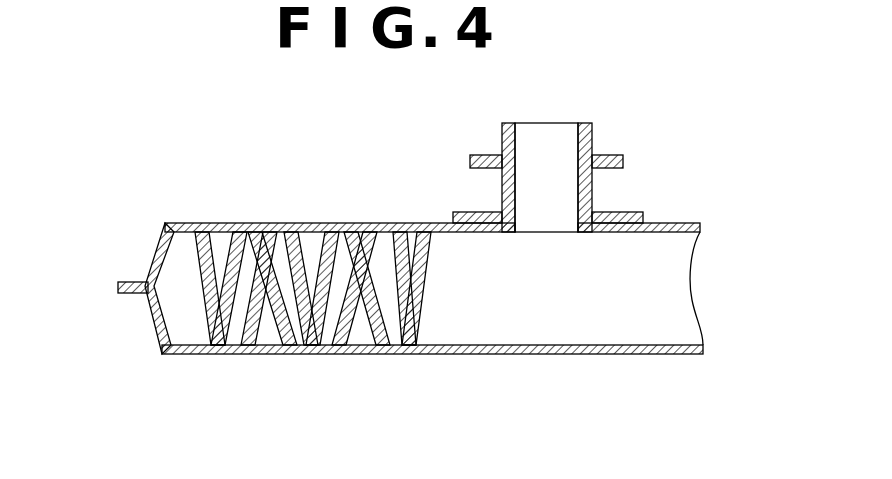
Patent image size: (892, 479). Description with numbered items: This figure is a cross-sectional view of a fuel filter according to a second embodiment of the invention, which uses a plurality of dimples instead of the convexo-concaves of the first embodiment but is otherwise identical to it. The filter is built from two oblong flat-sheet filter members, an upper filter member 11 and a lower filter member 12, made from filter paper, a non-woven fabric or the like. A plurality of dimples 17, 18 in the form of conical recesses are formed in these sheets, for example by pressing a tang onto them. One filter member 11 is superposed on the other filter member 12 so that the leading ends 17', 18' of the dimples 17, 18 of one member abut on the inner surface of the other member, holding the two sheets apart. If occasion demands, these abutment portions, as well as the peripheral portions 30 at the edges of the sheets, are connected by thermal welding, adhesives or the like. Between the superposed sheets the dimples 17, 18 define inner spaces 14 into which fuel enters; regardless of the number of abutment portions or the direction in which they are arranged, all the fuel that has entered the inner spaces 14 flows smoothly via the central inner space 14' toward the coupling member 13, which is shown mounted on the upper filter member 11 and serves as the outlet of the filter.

The upper filter member 11 is at (165, 222).
The lower filter member 12 is at (160, 354).
The coupling member 13 is at (592, 140).
The inner spaces 14 is at (432, 387).
The central inner space 14' is at (627, 327).
The dimples 17 is at (341, 223).
The leading ends of dimples 17' is at (326, 335).
The dimples 18 is at (250, 335).
The leading ends of dimples 18' is at (262, 223).
The peripheral portions 30 is at (130, 279).